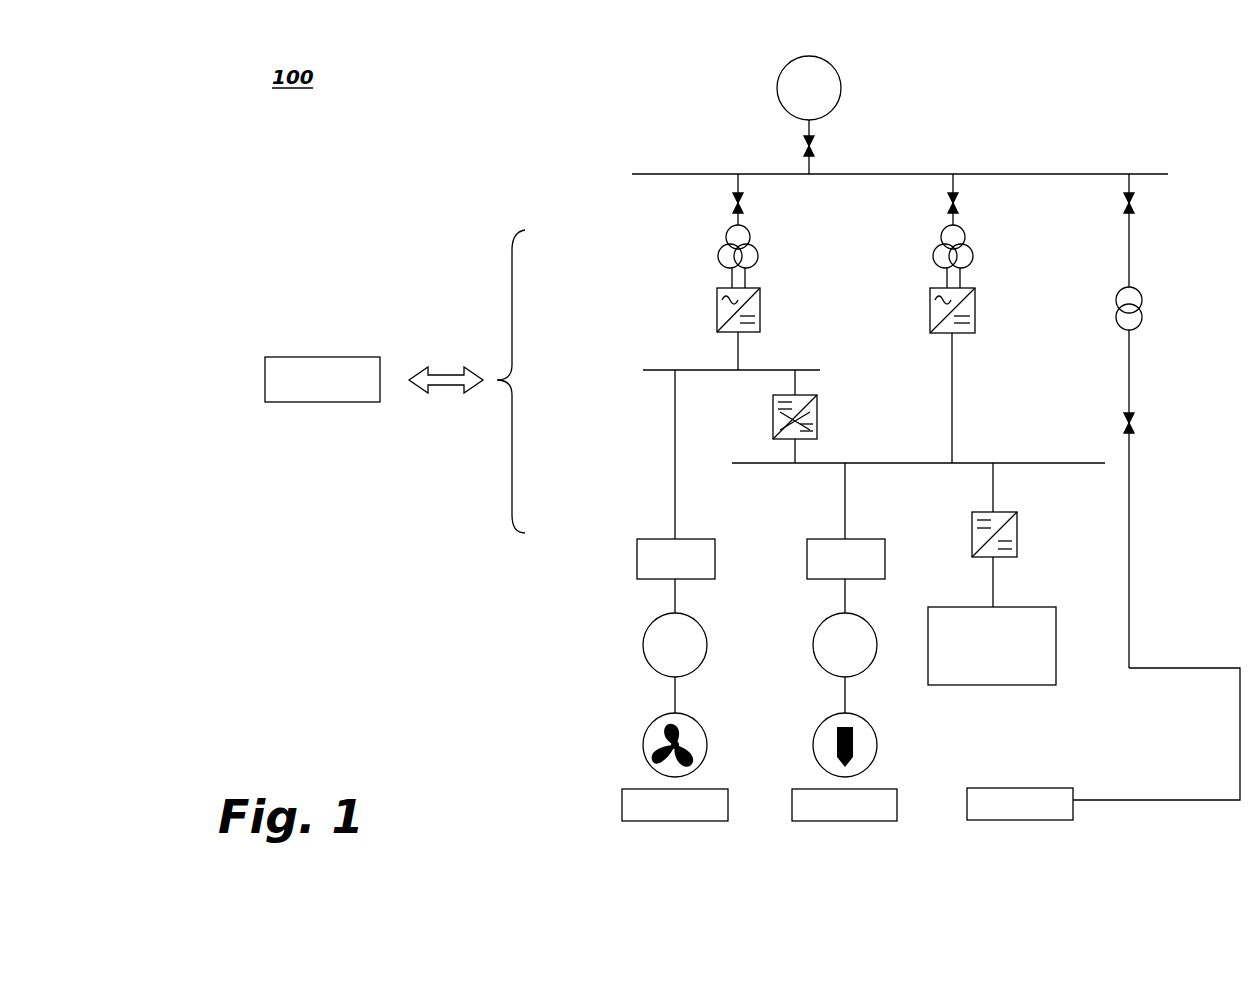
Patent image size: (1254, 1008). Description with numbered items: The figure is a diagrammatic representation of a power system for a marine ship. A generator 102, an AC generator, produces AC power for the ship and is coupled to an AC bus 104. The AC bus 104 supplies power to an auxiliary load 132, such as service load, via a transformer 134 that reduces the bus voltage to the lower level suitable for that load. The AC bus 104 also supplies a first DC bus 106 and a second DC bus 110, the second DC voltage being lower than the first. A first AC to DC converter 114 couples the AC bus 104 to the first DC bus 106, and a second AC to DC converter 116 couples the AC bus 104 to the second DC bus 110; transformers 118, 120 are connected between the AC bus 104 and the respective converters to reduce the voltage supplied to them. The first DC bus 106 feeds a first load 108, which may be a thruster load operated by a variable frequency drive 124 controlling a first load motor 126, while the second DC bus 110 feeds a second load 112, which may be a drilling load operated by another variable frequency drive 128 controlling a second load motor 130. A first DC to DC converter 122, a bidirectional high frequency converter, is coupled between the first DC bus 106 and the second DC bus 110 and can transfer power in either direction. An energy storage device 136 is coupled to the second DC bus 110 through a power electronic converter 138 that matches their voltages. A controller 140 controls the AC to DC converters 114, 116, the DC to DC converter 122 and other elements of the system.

The generator 102 is at (790, 67).
The AC bus 104 is at (995, 173).
The first DC bus 106 is at (787, 368).
The first load 108 is at (622, 793).
The second DC bus 110 is at (1040, 462).
The second load 112 is at (792, 793).
The first AC to DC converter 114 is at (716, 295).
The second AC to DC converter 116 is at (930, 296).
The transformer 118 is at (722, 252).
The transformer 120 is at (937, 252).
The first DC to DC converter 122 is at (773, 415).
The variable frequency drive 124 is at (637, 545).
The first load motor 126 is at (648, 635).
The variable frequency drive 128 is at (807, 545).
The second load motor 130 is at (815, 636).
The auxiliary load 132 is at (967, 793).
The transformer 134 is at (1116, 320).
The energy storage device 136 is at (1057, 637).
The power electronic converter 138 is at (972, 547).
The controller 140 is at (265, 375).